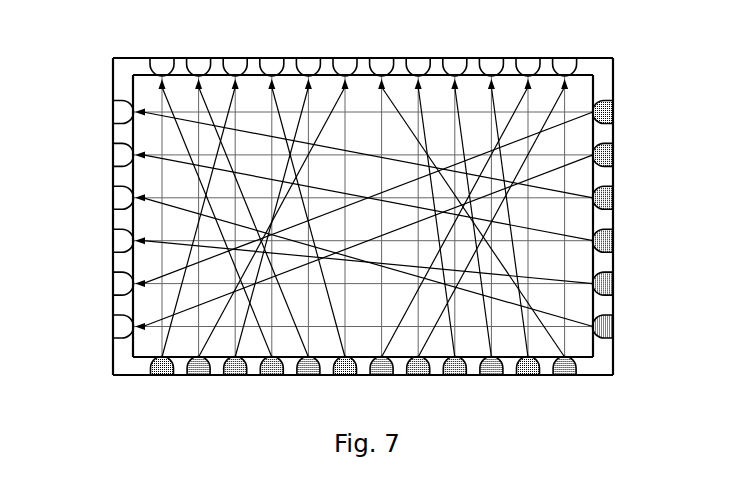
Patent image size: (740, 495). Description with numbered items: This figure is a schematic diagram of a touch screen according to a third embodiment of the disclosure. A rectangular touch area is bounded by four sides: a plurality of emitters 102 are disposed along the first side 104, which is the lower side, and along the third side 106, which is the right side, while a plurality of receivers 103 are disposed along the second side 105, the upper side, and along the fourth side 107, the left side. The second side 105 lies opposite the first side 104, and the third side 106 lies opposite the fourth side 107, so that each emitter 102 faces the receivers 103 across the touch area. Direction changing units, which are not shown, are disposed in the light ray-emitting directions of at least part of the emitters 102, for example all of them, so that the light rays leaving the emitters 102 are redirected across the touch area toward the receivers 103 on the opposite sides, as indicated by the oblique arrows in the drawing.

The emitters 102 is at (606, 327).
The receivers 103 is at (162, 58).
The first side 104 is at (595, 375).
The second side 105 is at (595, 58).
The third side 106 is at (613, 85).
The fourth side 107 is at (113, 85).